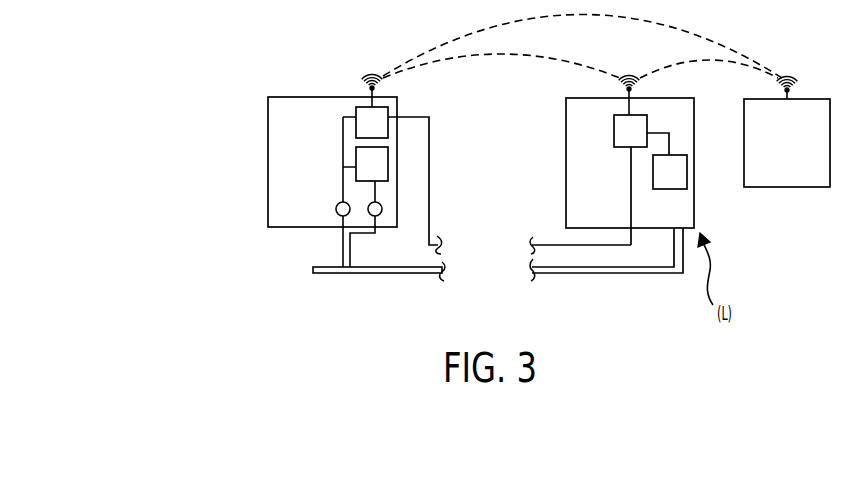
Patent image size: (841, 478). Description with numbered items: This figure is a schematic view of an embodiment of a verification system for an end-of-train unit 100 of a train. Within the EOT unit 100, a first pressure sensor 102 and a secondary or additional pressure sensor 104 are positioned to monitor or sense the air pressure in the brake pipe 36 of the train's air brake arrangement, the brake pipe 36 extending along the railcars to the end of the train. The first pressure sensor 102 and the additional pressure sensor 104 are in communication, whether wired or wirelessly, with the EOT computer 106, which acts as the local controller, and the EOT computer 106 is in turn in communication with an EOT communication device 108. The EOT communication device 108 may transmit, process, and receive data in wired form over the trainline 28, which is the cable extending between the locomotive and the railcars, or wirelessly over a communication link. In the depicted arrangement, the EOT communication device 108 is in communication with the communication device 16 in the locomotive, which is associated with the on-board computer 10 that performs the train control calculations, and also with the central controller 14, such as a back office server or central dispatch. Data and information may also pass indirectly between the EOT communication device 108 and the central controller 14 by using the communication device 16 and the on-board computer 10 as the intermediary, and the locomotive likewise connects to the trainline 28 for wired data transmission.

The end-of-train (EOT) unit 100 is at (254, 210).
The EOT communication device 108 is at (355, 110).
The EOT computer 106 is at (355, 155).
The additional pressure sensor 104 is at (381, 205).
The first pressure sensor 102 is at (337, 215).
The brake pipe 36 is at (385, 275).
The trainline 28 is at (429, 147).
The communication device 16 is at (647, 123).
The on-board computer 10 is at (687, 177).
The central controller 14 is at (796, 155).